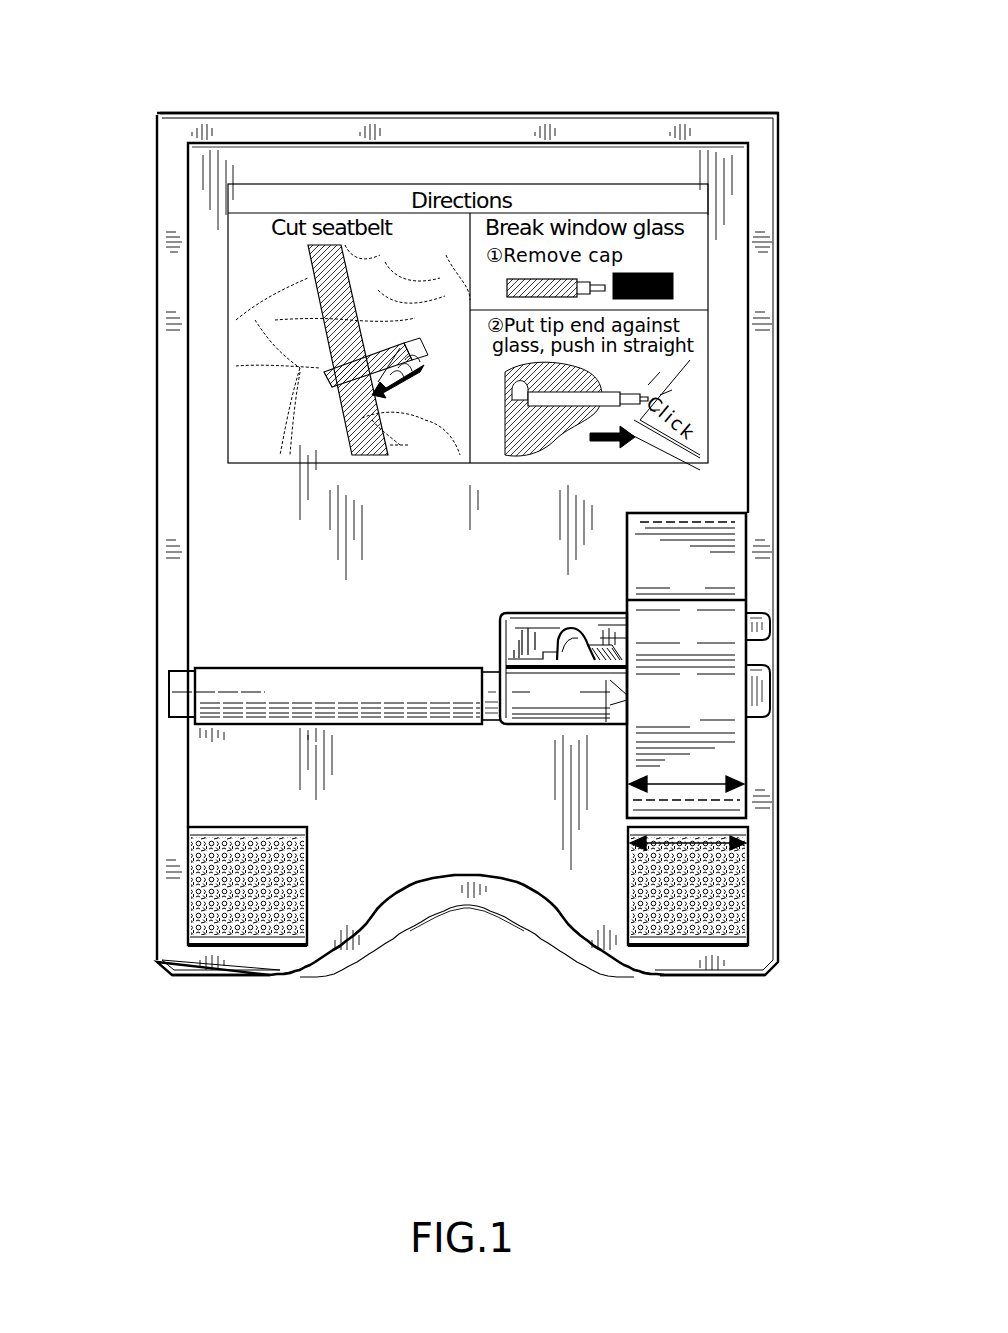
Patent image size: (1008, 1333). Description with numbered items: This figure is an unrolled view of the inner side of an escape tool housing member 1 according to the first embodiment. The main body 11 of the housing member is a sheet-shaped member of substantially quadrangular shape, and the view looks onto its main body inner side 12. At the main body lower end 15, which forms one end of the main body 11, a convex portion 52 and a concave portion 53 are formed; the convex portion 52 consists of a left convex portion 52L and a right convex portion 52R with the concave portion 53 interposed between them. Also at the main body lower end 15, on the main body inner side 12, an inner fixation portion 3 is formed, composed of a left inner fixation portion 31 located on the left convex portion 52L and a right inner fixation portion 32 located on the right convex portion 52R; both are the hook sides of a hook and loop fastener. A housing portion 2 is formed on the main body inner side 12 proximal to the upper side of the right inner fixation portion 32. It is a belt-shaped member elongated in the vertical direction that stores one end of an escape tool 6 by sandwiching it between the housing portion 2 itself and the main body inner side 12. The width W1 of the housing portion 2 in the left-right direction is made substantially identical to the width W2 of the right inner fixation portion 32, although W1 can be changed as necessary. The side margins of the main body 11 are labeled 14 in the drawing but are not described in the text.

The escape tool housing member 1 is at (156, 116).
The main body 11 is at (218, 110).
The main body inner side 12 is at (572, 160).
The side wall of housing 14 is at (156, 165).
The main body lower end 15 is at (156, 960).
The housing portion 2 is at (700, 566).
The escape tool 6 is at (403, 690).
The inner fixation portion 3 is at (457, 857).
The left inner fixation portion 31 is at (196, 868).
The right inner fixation portion 32 is at (707, 870).
The width of the housing portion W1 is at (723, 786).
The width of the right inner fixation portion W2 is at (667, 847).
The convex portion 52 is at (697, 1015).
The left convex portion 52L is at (275, 980).
The right convex portion 52R is at (665, 980).
The concave portion 53 is at (470, 907).